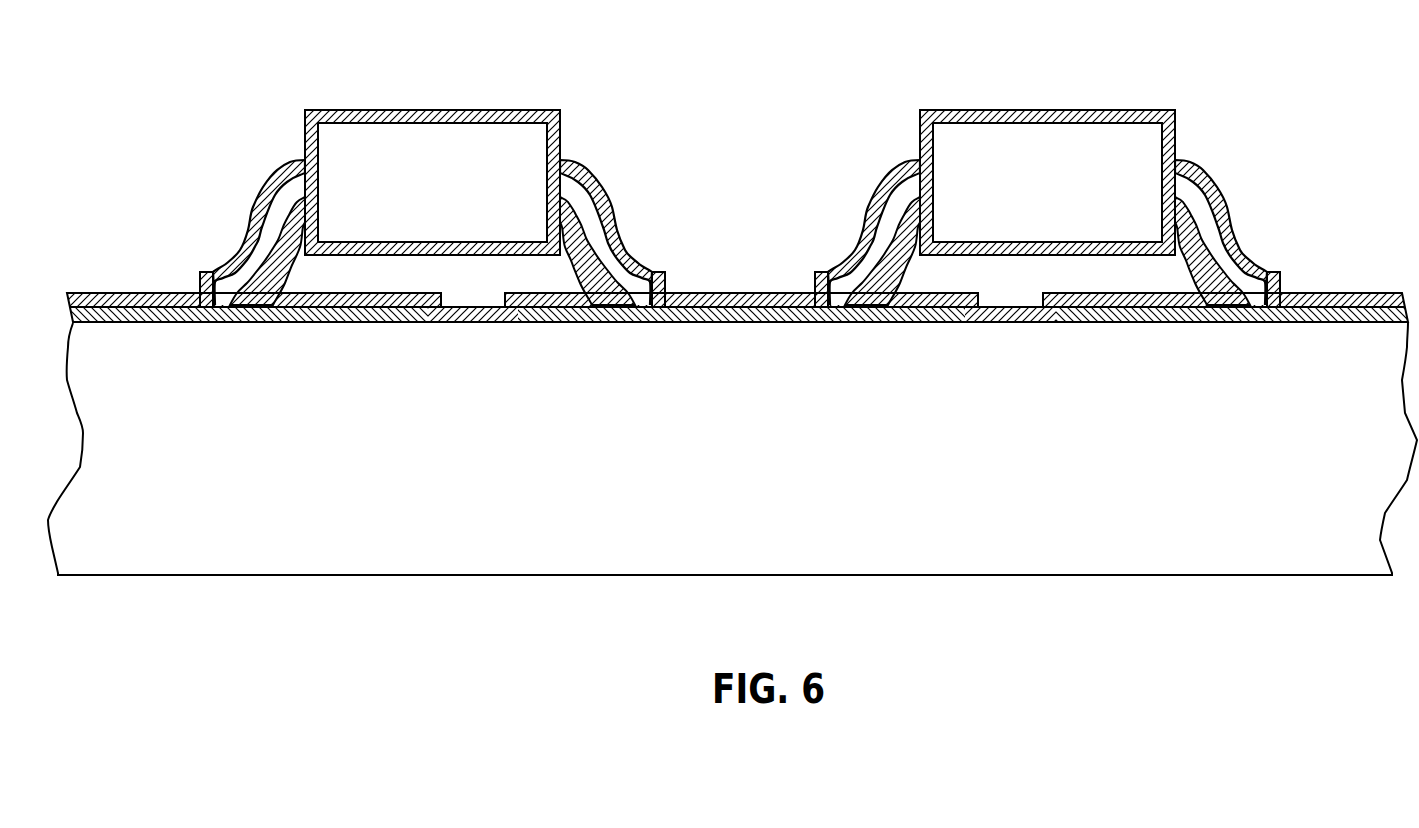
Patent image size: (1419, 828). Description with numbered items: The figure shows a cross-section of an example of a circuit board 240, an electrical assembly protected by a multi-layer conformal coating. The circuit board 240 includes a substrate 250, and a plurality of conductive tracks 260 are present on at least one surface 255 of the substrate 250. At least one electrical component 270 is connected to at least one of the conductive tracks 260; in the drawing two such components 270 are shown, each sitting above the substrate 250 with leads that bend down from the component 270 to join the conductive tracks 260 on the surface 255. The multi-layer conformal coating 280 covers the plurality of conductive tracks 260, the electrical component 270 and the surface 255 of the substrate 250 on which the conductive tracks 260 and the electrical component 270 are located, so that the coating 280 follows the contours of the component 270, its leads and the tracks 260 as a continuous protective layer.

The circuit board 240 is at (133, 197).
The substrate 250 is at (135, 578).
The surface of the substrate 255 is at (473, 322).
The conductive tracks 260 is at (108, 322).
The electrical component 270 is at (448, 191).
The multi-layer conformal coating 280 is at (422, 108).